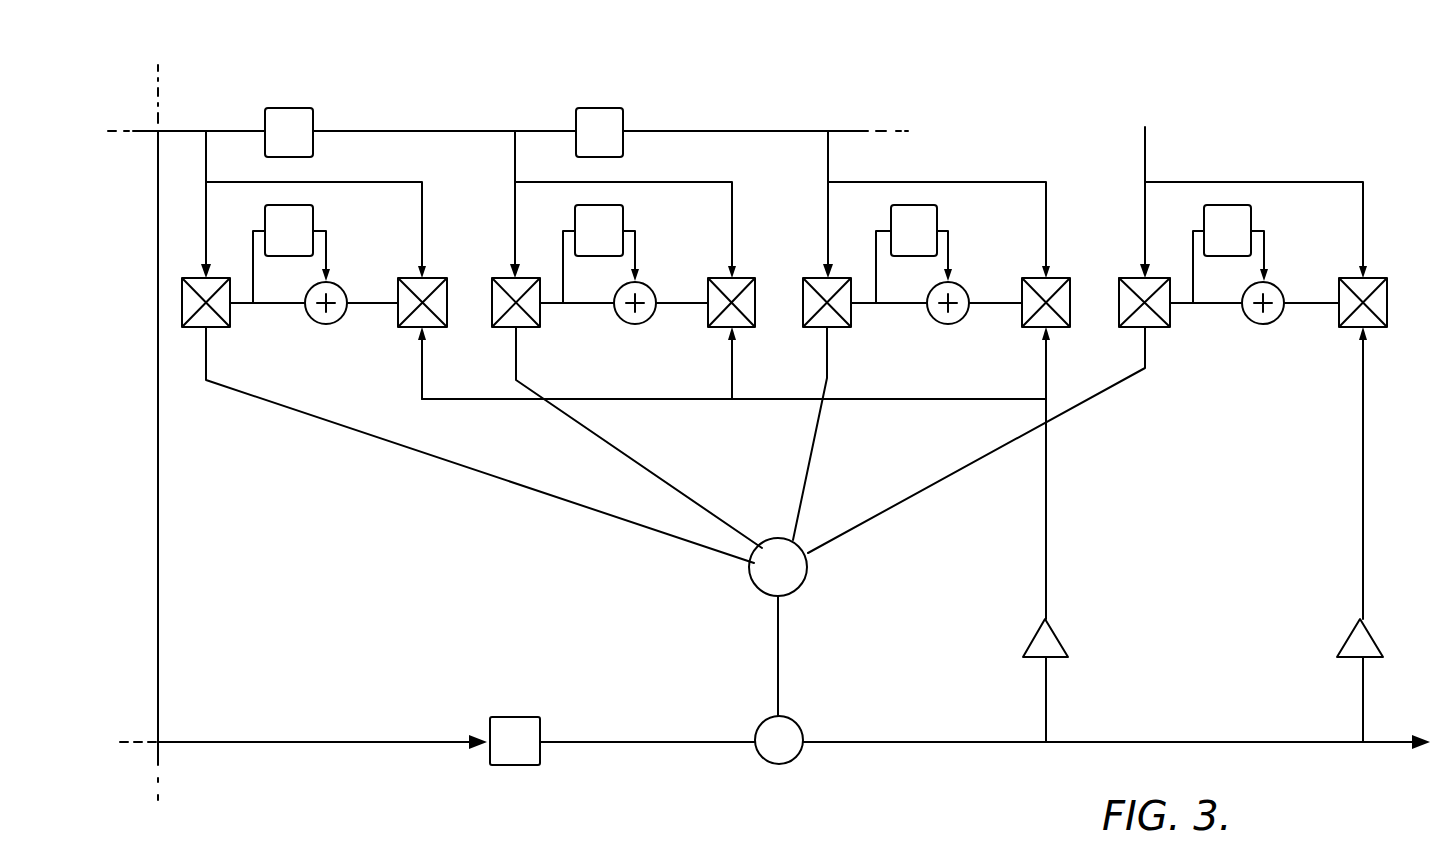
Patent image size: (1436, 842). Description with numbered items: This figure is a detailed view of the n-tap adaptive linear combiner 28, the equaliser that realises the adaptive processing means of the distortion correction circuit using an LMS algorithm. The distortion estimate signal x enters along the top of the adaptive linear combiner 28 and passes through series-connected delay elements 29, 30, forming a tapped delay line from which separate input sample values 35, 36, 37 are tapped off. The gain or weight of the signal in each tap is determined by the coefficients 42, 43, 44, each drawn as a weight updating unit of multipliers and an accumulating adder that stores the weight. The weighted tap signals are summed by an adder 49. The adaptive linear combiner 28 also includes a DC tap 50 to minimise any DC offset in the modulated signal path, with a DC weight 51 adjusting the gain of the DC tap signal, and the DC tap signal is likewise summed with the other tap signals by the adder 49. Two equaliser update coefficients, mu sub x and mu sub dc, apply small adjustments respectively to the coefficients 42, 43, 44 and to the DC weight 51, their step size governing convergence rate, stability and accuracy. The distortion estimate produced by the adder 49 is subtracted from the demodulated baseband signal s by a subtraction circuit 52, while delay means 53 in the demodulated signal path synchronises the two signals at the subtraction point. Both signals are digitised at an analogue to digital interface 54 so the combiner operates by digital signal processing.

The adaptive linear combiner 28 is at (432, 110).
The delay element 29 is at (285, 122).
The delay element 30 is at (592, 118).
The input sample value 35 is at (206, 128).
The input sample value 36 is at (515, 128).
The input sample value 37 is at (828, 128).
The coefficient 42 is at (272, 380).
The coefficient 43 is at (596, 373).
The coefficient 44 is at (904, 368).
The adder 49 is at (806, 578).
The DC tap 50 is at (1147, 152).
The DC weight 51 is at (1243, 345).
The subtraction circuit 52 is at (766, 762).
The delay means 53 is at (510, 762).
The analogue to digital interface 54 is at (160, 754).